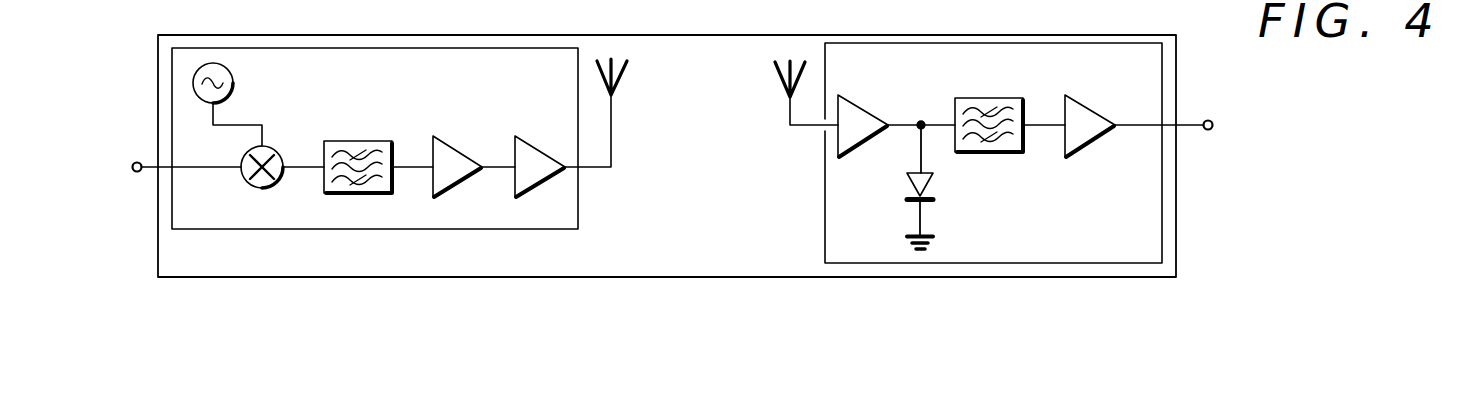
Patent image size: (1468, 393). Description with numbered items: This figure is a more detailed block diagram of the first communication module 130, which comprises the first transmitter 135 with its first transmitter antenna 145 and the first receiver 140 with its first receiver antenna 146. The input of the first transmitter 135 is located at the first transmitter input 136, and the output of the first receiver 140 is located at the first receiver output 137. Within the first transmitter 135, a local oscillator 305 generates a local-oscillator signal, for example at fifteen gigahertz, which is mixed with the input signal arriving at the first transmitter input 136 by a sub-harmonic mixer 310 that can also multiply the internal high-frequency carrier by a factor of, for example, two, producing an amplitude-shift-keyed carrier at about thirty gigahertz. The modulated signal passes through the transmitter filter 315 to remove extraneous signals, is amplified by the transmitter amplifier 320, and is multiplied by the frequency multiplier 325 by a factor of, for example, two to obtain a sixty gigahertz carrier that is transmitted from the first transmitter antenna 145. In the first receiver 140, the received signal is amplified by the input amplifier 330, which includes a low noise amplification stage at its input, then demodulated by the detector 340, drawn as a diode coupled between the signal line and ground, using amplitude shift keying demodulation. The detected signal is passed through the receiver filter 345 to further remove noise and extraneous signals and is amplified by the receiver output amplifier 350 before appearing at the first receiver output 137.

The first communication module 130 is at (1176, 60).
The first transmitter 135 is at (578, 195).
The first transmitter input 136 is at (137, 161).
The first receiver output 137 is at (1214, 120).
The first receiver 140 is at (825, 191).
The first transmitter antenna 145 is at (617, 77).
The first receiver antenna 146 is at (778, 75).
The local oscillator 305 is at (234, 86).
The sub-harmonic mixer 310 is at (247, 182).
The transmitter filter 315 is at (345, 140).
The transmitter amplifier 320 is at (456, 144).
The frequency multiplier 325 is at (538, 143).
The input amplifier 330 is at (862, 152).
The detector 340 is at (931, 184).
The receiver filter 345 is at (985, 97).
The receiver output amplifier 350 is at (1090, 148).